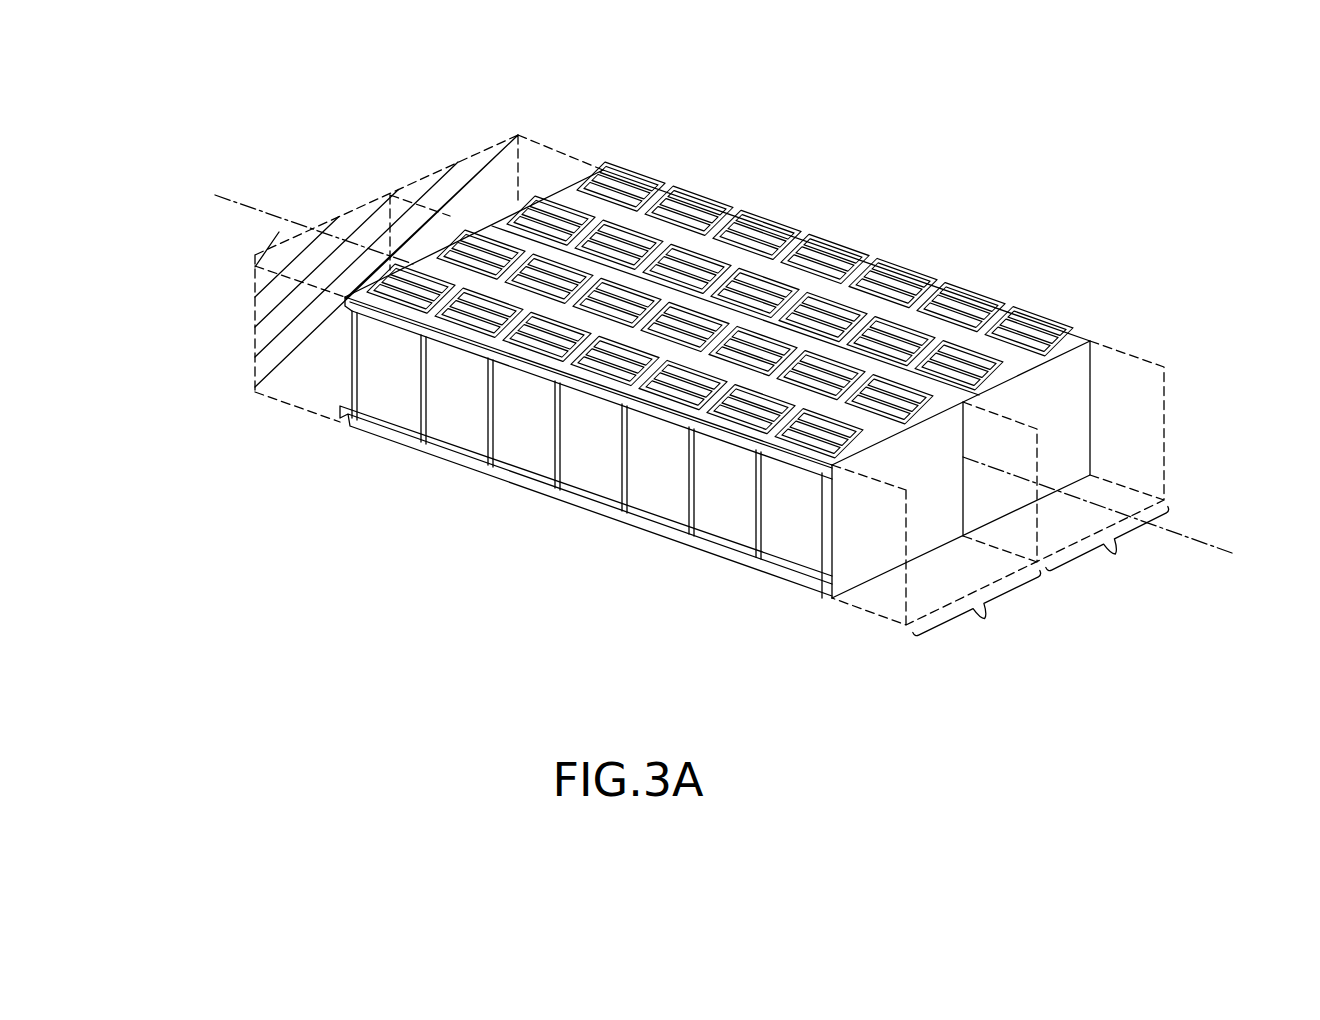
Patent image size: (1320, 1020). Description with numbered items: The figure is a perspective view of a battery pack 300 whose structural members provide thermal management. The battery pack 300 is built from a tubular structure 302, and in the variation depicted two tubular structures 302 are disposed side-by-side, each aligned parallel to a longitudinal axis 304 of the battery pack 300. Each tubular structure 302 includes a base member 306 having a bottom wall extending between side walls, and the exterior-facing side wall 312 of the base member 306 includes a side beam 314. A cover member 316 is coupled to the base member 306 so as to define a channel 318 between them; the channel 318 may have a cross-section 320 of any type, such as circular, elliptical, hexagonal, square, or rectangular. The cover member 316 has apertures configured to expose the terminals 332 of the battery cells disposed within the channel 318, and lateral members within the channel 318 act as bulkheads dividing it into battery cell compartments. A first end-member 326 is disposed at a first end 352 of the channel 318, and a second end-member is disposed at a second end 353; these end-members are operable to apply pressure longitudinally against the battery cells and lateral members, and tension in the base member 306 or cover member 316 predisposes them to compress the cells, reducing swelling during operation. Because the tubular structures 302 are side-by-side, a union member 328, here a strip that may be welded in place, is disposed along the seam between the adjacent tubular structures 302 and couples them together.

The battery pack 300 is at (691, 369).
The tubular structure 302 is at (1043, 588).
The longitudinal axis 304 is at (1193, 543).
The base member 306 is at (586, 469).
The exterior-facing side wall 312 is at (686, 573).
The side beam 314 is at (668, 497).
The cover member 316 is at (803, 243).
The channel 318 is at (650, 277).
The cross-section 320 is at (487, 175).
The first end-member 326 is at (1097, 387).
The union member 328 is at (630, 280).
The terminals 332 is at (988, 318).
The first end 352 is at (1185, 471).
The second end 353 is at (426, 155).